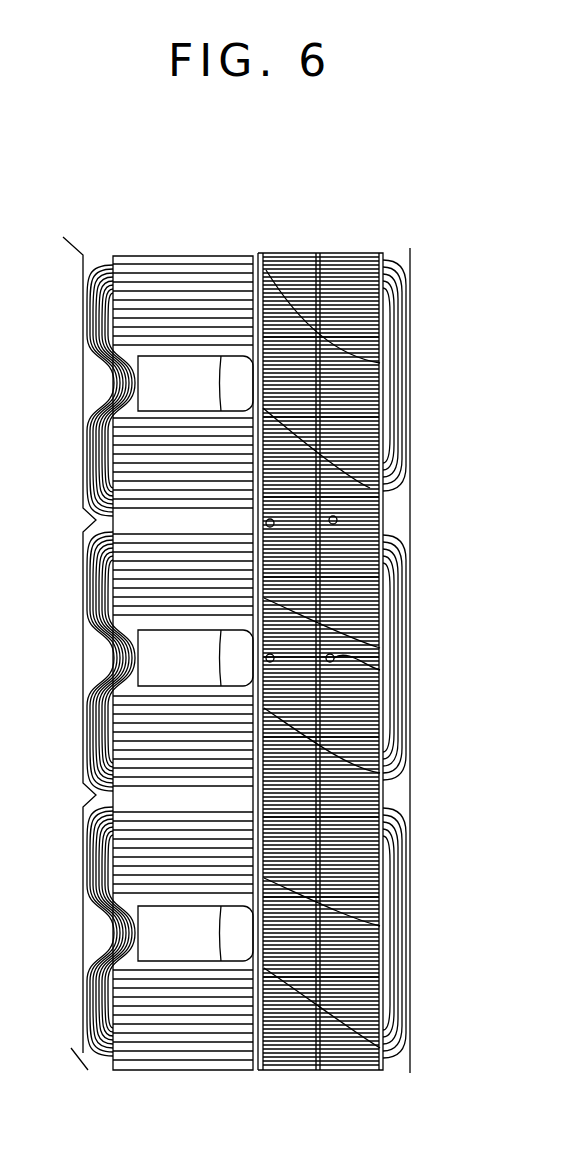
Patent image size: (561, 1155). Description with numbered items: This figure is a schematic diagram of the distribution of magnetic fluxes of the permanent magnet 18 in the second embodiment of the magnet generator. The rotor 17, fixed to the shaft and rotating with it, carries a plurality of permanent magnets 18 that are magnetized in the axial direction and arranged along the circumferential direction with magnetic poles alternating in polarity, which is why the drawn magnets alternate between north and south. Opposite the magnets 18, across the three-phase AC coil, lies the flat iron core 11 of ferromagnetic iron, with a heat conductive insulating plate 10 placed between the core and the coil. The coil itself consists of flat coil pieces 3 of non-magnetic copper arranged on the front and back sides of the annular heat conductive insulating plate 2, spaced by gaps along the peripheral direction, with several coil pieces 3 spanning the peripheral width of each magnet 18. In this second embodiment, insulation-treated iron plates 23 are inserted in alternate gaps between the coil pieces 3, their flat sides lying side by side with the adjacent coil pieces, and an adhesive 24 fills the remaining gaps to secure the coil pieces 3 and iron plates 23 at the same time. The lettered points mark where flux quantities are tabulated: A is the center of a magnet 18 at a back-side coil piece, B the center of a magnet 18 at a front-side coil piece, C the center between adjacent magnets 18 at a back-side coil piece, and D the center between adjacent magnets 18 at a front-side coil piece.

The heat conductive insulating plate 2 is at (312, 262).
The coil piece 3 is at (286, 266).
The heat conductive insulating plate 10 is at (378, 248).
The flat iron core 11 is at (402, 262).
The rotor 17 is at (80, 253).
The permanent magnet 18 is at (148, 262).
The iron plate 23 is at (257, 268).
The adhesive 24 is at (240, 267).
The center of the magnet at back-side coil piece A is at (362, 480).
The center of the magnet at front-side coil piece B is at (380, 531).
The center between adjacent magnets at back-side coil piece C is at (340, 652).
The center between adjacent magnets at front-side coil piece D is at (245, 658).